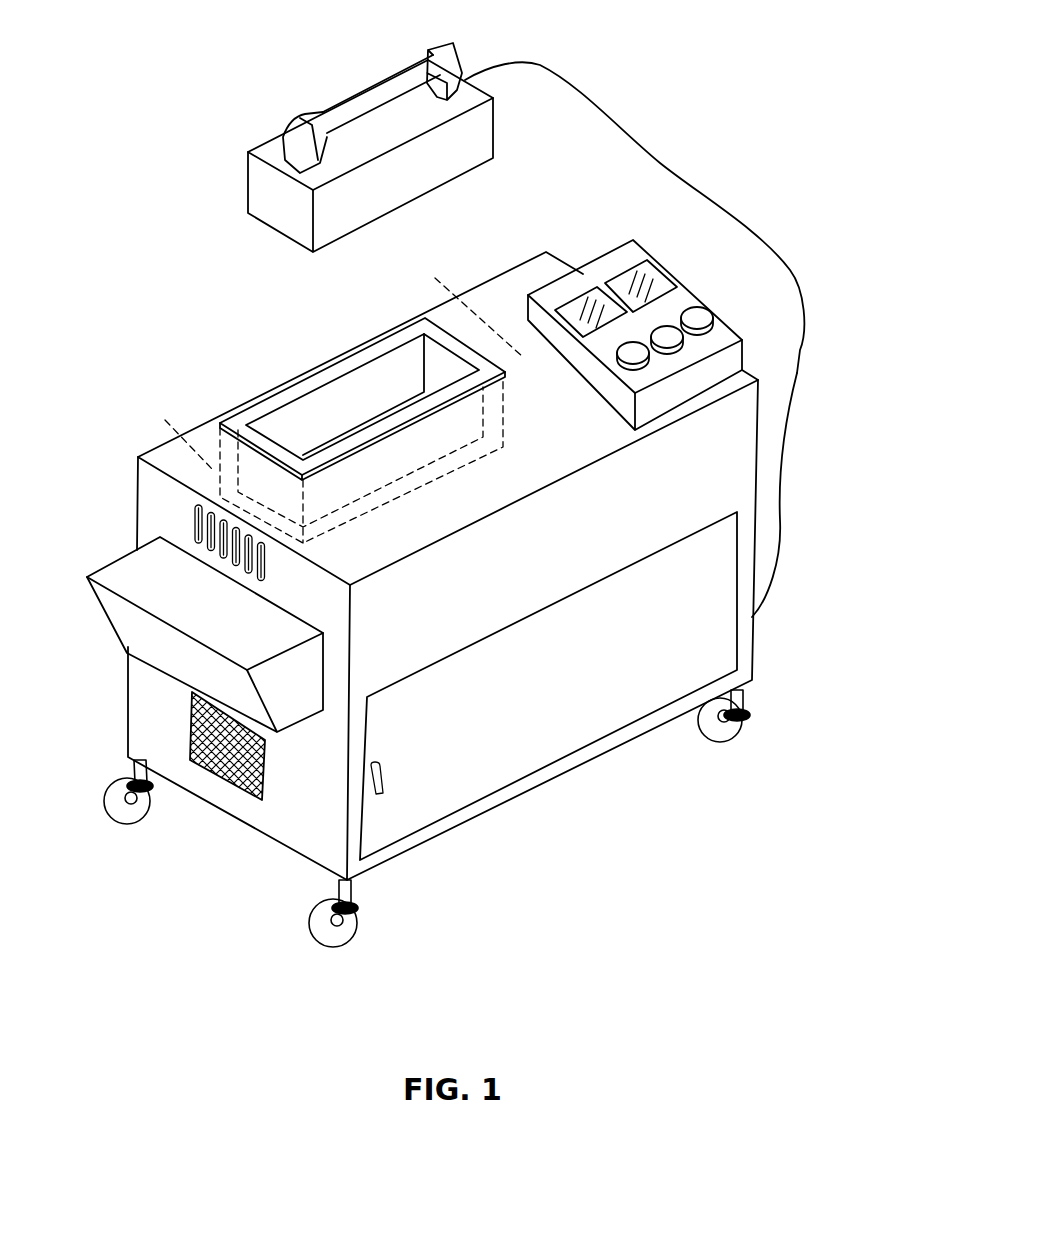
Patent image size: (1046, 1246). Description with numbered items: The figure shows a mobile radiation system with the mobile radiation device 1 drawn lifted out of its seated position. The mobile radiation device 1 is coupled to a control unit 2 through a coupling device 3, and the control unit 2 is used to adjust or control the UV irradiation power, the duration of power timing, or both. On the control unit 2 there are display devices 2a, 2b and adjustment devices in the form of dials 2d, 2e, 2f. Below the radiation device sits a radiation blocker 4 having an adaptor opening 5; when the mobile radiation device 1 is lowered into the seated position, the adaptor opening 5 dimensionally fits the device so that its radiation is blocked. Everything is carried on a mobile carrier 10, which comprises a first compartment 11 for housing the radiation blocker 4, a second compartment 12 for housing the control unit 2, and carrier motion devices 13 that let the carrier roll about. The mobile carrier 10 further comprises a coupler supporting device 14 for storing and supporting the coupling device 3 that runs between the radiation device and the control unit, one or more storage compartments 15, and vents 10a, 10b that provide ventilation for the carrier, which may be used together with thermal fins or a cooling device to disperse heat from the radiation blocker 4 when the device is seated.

The mobile radiation device 1 is at (272, 148).
The control unit 2 is at (683, 297).
The display device 2a is at (590, 292).
The display device 2b is at (625, 272).
The dial 2d is at (700, 315).
The dial 2e is at (686, 344).
The dial 2f is at (650, 362).
The coupling device 3 is at (660, 158).
The radiation blocker 4 is at (243, 411).
The adaptor opening 5 is at (320, 420).
The mobile carrier 10 is at (585, 852).
The vent 10a is at (187, 530).
The vent 10b is at (190, 738).
The first compartment 11 is at (165, 420).
The second compartment 12 is at (435, 278).
The carrier motion device 13 is at (128, 822).
The coupler supporting device 14 is at (780, 527).
The storage compartment 15 is at (290, 715).